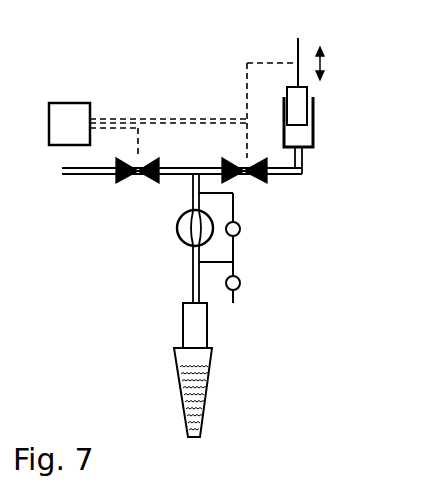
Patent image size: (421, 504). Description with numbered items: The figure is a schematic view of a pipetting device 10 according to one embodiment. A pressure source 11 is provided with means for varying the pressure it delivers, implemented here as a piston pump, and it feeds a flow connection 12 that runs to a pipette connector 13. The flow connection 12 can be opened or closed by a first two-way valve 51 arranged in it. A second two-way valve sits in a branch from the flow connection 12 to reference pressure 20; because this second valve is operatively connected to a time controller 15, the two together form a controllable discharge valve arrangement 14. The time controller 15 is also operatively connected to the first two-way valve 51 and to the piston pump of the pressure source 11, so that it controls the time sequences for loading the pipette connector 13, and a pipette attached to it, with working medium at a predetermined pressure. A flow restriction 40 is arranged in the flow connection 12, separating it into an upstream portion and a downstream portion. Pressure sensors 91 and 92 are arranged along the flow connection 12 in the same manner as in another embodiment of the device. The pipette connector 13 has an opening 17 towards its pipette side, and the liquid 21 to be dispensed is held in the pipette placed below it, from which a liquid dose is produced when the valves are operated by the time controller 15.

The dispensing device 10 is at (190, 50).
The pressure source 11 is at (330, 118).
The flow connection 12 is at (282, 172).
The pipette connector 13 is at (208, 327).
The controllable discharge valve arrangement 14 is at (133, 181).
The time controller 15 is at (77, 136).
The opening 17 is at (169, 339).
The reference pressure 20 is at (48, 187).
The liquid 21 is at (206, 394).
The flow restriction 40 is at (177, 238).
The first two-way valve 51 is at (251, 183).
The pressure sensor 91 is at (241, 229).
The pressure sensor 92 is at (241, 284).